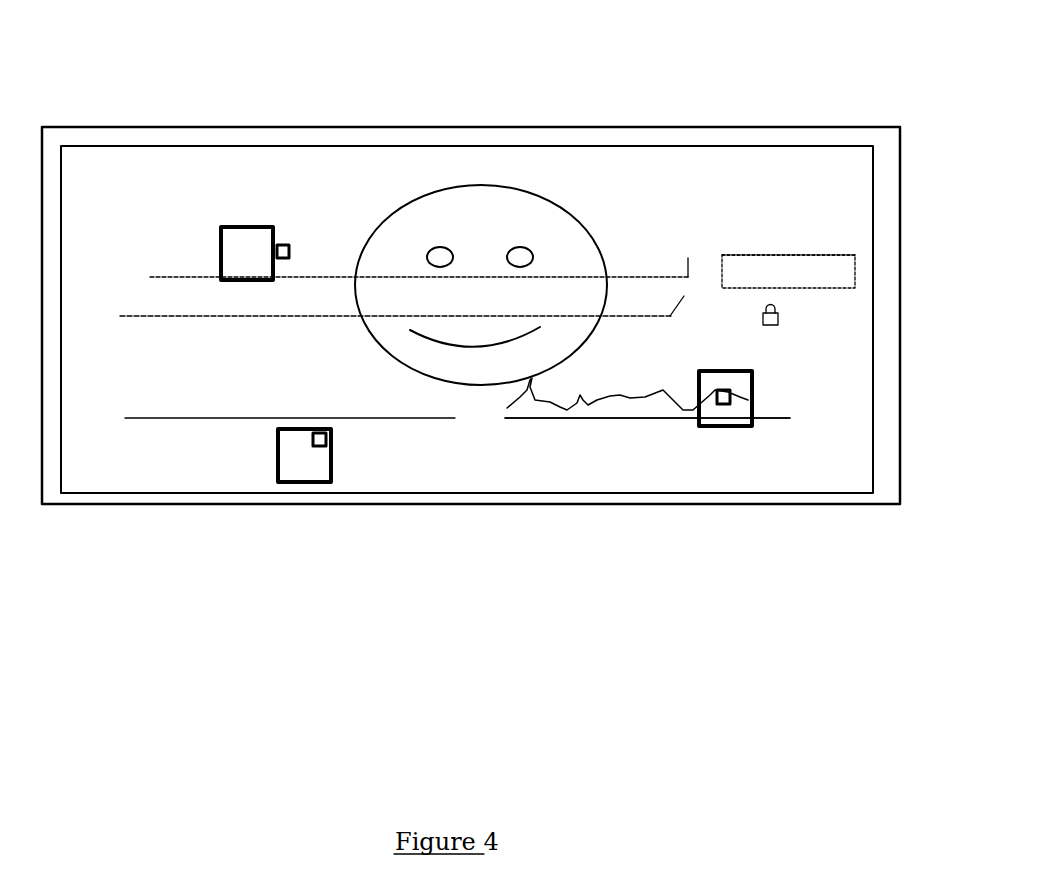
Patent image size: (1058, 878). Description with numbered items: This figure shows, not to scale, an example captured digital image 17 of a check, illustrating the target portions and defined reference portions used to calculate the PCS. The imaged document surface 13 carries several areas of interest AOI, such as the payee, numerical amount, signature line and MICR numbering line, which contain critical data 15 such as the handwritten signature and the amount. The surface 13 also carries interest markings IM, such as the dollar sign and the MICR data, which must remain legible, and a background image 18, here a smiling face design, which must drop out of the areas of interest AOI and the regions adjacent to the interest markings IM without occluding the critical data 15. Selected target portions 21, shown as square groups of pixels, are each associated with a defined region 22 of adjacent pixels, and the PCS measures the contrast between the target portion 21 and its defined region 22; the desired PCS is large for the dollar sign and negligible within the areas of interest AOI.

The document surface 13 is at (822, 484).
The critical data 15 is at (764, 262).
The recorded digital image 17 is at (539, 92).
The background image 18 is at (447, 210).
The target portion 21 is at (245, 237).
The defined region 22 is at (284, 245).
The interest marking IM is at (709, 258).
The area of interest AOI is at (831, 253).